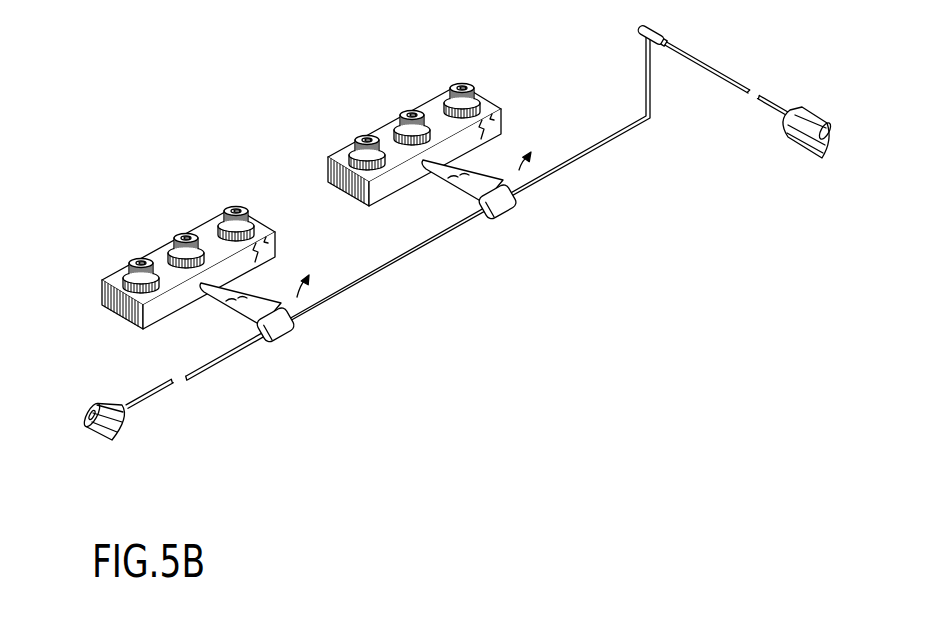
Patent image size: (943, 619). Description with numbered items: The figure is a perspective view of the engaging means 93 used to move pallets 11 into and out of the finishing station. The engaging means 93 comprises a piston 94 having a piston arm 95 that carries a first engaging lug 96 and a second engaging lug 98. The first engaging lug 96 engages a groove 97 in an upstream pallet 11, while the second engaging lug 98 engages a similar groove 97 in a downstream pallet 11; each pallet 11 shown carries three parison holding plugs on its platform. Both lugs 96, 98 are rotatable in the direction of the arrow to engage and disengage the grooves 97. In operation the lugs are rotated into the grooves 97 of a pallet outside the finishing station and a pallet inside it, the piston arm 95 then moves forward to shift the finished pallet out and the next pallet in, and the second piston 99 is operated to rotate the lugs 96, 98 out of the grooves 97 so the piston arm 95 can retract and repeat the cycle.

The pallet 11 is at (337, 189).
The engaging means 93 is at (388, 281).
The piston 94 is at (118, 433).
The piston arm 95 is at (243, 349).
The first engaging lug 96 is at (247, 302).
The groove 97 is at (231, 276).
The second engaging lug 98 is at (456, 180).
The second piston 99 is at (792, 143).